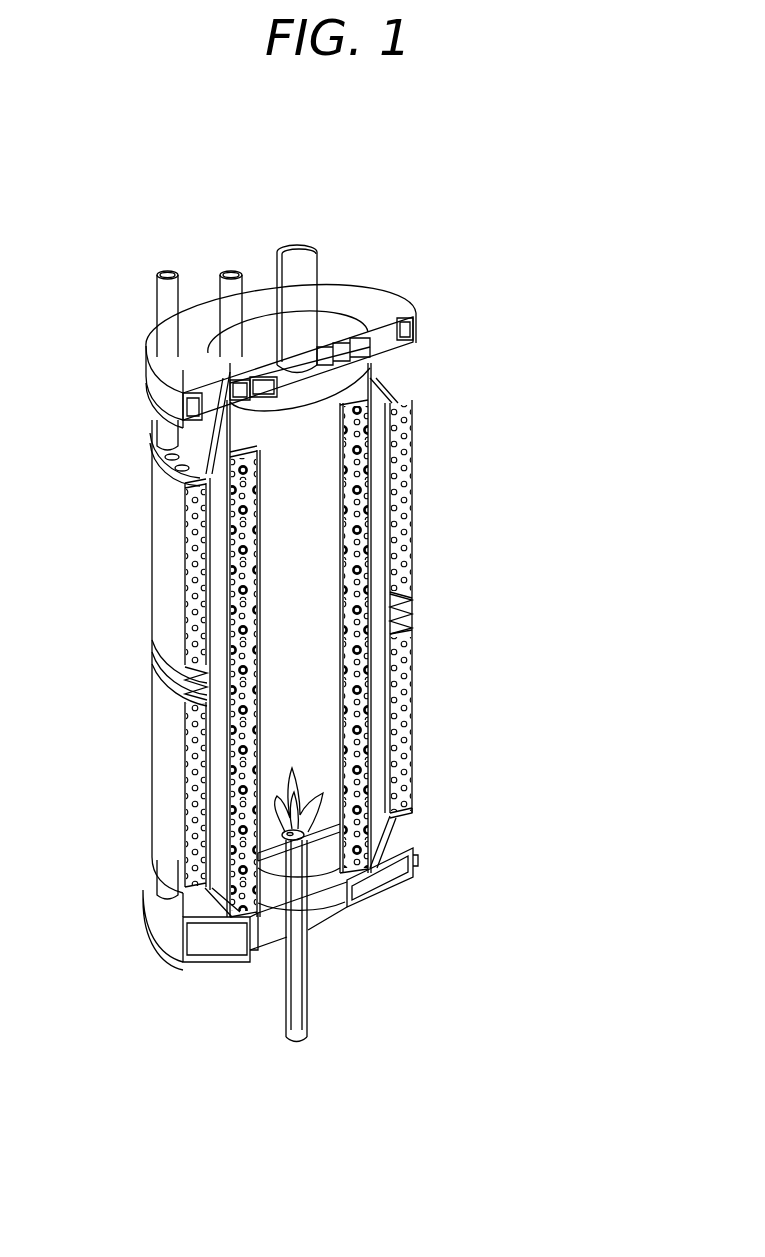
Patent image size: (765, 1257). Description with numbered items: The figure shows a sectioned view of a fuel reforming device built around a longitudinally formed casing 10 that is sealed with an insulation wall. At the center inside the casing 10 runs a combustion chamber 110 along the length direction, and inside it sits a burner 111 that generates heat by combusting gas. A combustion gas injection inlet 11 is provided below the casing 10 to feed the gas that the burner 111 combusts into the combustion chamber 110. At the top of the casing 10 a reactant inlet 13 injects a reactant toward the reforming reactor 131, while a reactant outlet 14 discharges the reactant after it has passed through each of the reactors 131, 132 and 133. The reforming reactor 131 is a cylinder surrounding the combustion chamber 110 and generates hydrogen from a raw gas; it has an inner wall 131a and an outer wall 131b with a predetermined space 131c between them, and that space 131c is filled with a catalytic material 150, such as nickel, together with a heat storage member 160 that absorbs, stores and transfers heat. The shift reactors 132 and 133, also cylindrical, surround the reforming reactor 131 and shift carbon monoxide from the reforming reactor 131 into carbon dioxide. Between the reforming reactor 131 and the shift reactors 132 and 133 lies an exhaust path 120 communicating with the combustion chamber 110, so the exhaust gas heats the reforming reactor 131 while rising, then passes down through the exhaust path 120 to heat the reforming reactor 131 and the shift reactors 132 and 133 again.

The casing 10 is at (422, 442).
The combustion gas injection inlet 11 is at (297, 1013).
The reactant inlet 13 is at (297, 273).
The reactant outlet 14 is at (170, 273).
The combustion chamber 110 is at (299, 671).
The burner 111 is at (285, 835).
The exhaust path 120 is at (380, 538).
The reforming reactor 131 is at (240, 602).
The inner wall 131a is at (357, 868).
The outer wall 131b is at (403, 812).
The space 131c is at (358, 840).
The shift reactor 132 is at (198, 743).
The shift reactor 133 is at (198, 532).
The catalytic material 150 is at (362, 580).
The heat storage member 160 is at (358, 500).